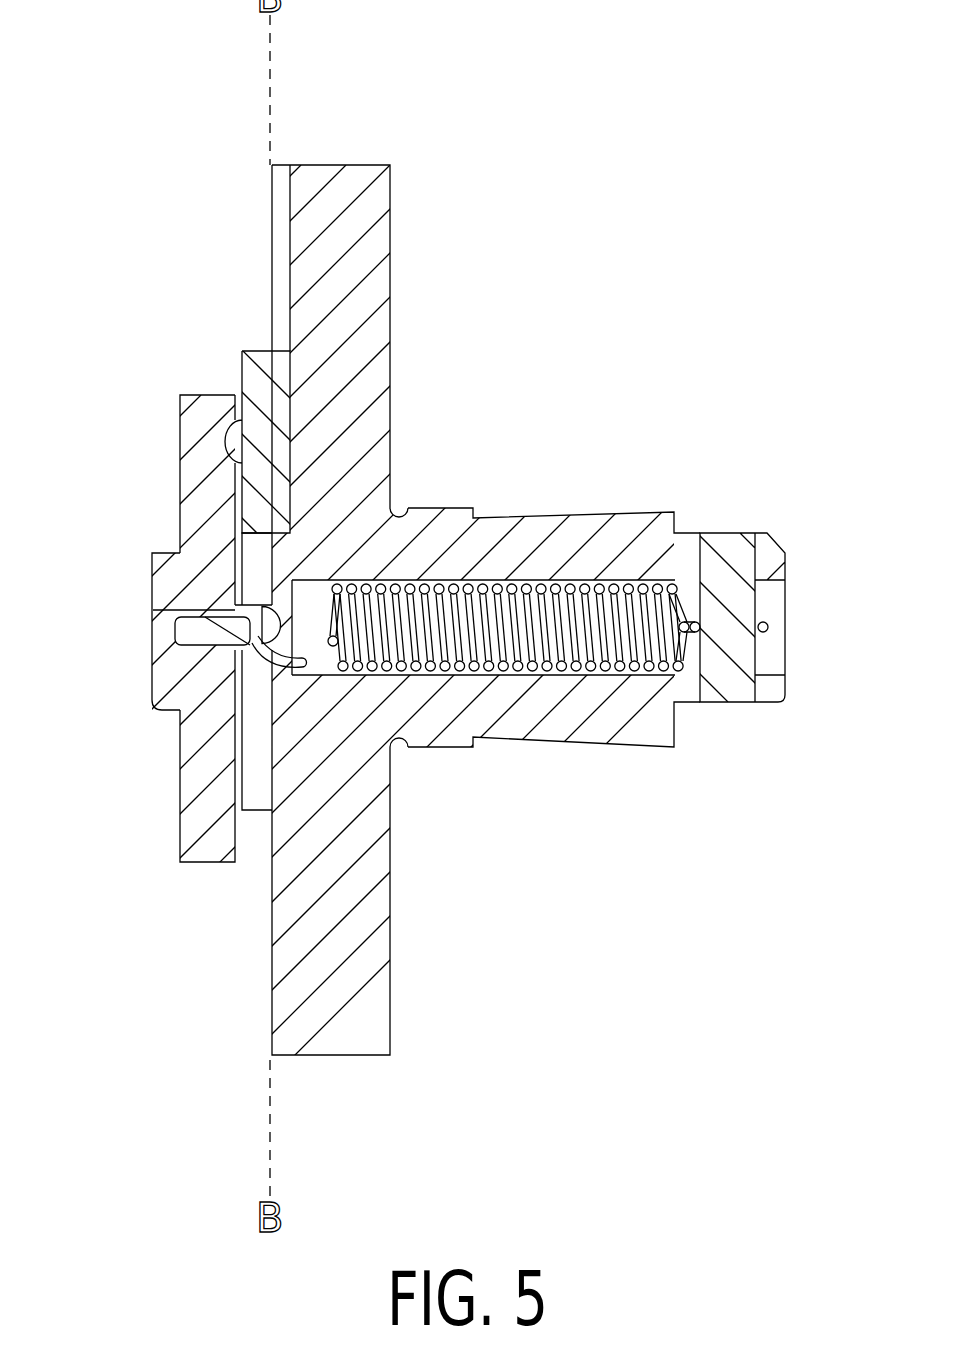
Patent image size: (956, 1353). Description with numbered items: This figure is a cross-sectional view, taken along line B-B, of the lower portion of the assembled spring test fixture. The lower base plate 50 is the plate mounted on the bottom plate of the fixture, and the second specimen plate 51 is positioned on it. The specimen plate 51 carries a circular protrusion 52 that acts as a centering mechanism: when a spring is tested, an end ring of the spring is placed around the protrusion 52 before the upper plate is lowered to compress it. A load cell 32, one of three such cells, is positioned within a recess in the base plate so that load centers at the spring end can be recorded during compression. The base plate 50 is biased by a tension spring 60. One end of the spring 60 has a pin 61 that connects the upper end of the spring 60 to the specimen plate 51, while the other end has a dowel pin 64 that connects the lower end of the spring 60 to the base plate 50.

The lower base plate 50 is at (380, 283).
The second specimen plate 51 is at (204, 413).
The circular protrusion 52 is at (155, 553).
The pin 61 is at (186, 634).
The load cell 32 is at (274, 440).
The tension spring 60 is at (510, 614).
The dowel pin 64 is at (737, 683).